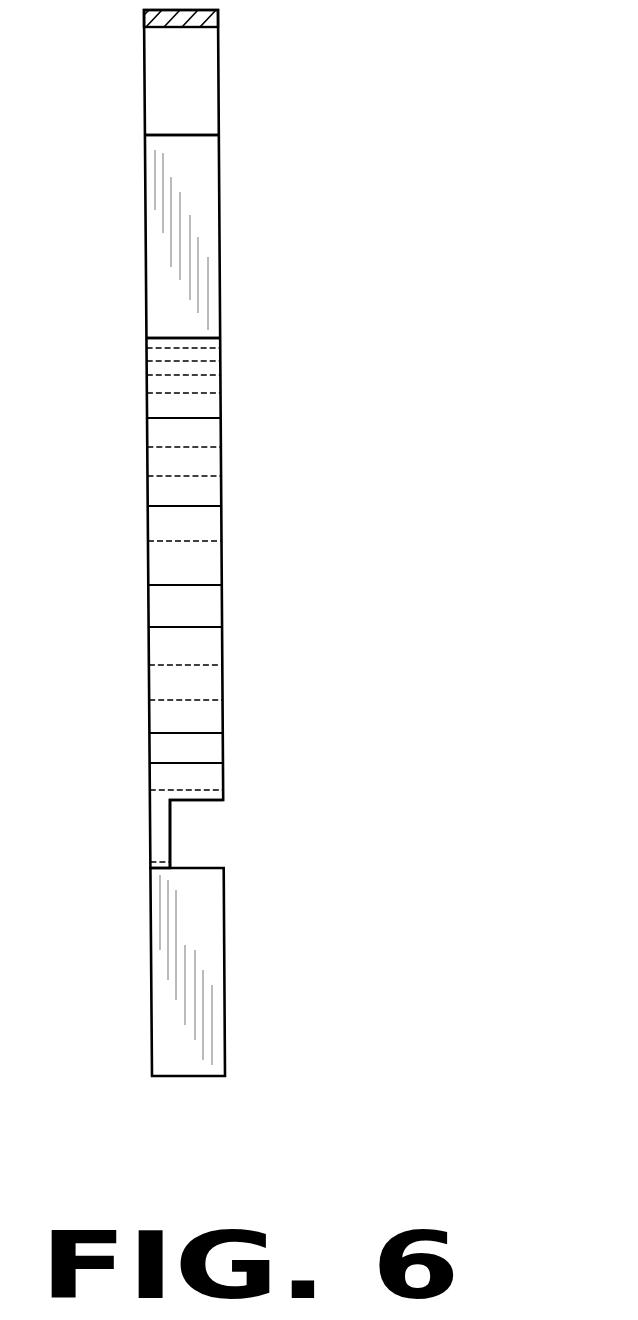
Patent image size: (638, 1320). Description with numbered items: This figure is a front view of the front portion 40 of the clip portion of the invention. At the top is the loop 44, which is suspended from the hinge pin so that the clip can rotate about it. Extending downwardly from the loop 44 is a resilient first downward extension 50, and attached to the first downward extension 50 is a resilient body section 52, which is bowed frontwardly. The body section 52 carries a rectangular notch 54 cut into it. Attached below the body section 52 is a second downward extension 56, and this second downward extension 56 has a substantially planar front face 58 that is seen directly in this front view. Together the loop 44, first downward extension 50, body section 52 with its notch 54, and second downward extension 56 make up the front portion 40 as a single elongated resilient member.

The front portion 40 is at (352, 440).
The loop 44 is at (218, 53).
The first downward extension 50 is at (219, 243).
The body section 52 is at (221, 497).
The rectangular notch 54 is at (185, 826).
The second downward extension 56 is at (224, 901).
The front face 58 is at (194, 1012).